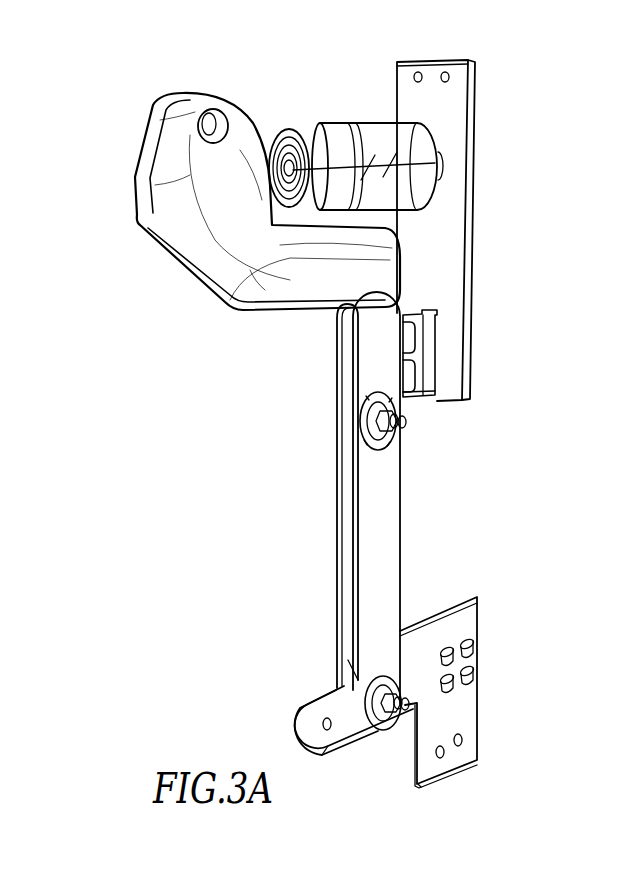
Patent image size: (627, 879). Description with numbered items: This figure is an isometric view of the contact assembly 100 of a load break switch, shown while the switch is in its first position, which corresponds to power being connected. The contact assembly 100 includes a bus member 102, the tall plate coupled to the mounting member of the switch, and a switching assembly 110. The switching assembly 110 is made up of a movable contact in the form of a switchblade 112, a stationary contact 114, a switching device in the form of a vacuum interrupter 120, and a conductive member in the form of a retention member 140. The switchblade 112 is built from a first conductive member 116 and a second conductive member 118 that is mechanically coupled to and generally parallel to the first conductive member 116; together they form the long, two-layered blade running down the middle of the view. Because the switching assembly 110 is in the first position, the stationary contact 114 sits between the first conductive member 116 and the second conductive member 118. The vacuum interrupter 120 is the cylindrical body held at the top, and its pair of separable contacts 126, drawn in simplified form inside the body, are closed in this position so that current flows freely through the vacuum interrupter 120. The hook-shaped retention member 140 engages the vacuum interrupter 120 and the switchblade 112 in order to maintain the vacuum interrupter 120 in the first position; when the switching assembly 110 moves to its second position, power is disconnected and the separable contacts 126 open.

The contact assembly 100 is at (204, 61).
The bus member 102 is at (479, 222).
The switching assembly 110 is at (310, 341).
The switchblade 112 is at (410, 550).
The stationary contact 114 is at (425, 409).
The first conductive member 116 is at (343, 488).
The second conductive member 118 is at (385, 493).
The vacuum interrupter 120 is at (324, 114).
The pair of separable contacts 126 is at (417, 163).
The retention member 140 is at (162, 272).